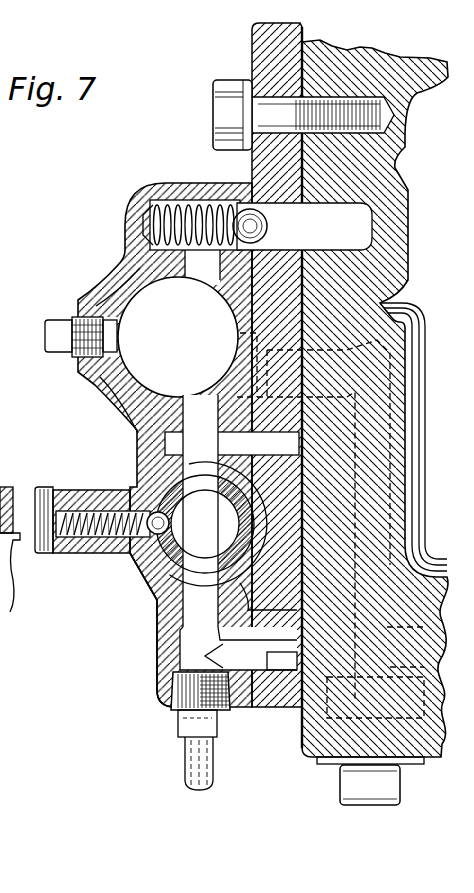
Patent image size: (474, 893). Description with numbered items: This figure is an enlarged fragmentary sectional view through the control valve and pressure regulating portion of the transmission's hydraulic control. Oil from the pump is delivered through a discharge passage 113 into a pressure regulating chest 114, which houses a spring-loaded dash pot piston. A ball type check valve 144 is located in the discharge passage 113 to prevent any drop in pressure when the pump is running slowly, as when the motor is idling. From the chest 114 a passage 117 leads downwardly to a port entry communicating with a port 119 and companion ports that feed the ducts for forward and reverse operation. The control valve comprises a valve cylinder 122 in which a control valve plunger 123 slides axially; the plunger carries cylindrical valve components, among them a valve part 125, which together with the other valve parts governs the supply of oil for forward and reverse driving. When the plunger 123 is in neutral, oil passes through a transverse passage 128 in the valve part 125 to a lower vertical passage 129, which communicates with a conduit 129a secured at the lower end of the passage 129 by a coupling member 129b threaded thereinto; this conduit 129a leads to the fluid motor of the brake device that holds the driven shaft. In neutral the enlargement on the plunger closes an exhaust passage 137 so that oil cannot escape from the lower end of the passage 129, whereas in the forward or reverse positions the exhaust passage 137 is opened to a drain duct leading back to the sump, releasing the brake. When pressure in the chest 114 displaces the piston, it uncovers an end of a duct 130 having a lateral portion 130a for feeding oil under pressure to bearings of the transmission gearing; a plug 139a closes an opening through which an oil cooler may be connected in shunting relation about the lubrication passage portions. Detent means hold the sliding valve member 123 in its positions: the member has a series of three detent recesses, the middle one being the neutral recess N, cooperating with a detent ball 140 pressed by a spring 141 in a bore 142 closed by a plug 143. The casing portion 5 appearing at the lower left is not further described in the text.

The valve casing 5 is at (153, 672).
The pump discharge passage 113 is at (198, 206).
The pressure regulating chest 114 is at (100, 292).
The passage 117 is at (203, 402).
The port 119 is at (212, 462).
The valve cylinder 122 is at (148, 585).
The control valve plunger 123 is at (150, 510).
The cylindrical valve component 125 is at (228, 538).
The transverse passage 128 is at (234, 526).
The lower passage 129 is at (207, 595).
The conduit 129a is at (198, 760).
The coupling member 129b is at (180, 722).
The duct 130 is at (232, 368).
The lateral portion of duct 130a is at (240, 336).
The exhaust passage 137 is at (284, 660).
The plug 139a is at (364, 783).
The detent ball 140 is at (125, 558).
The spring 141 is at (107, 513).
The bore 142 is at (82, 510).
The plug 143 is at (44, 557).
The ball type check valve 144 is at (245, 217).
The detent recess N is at (133, 558).